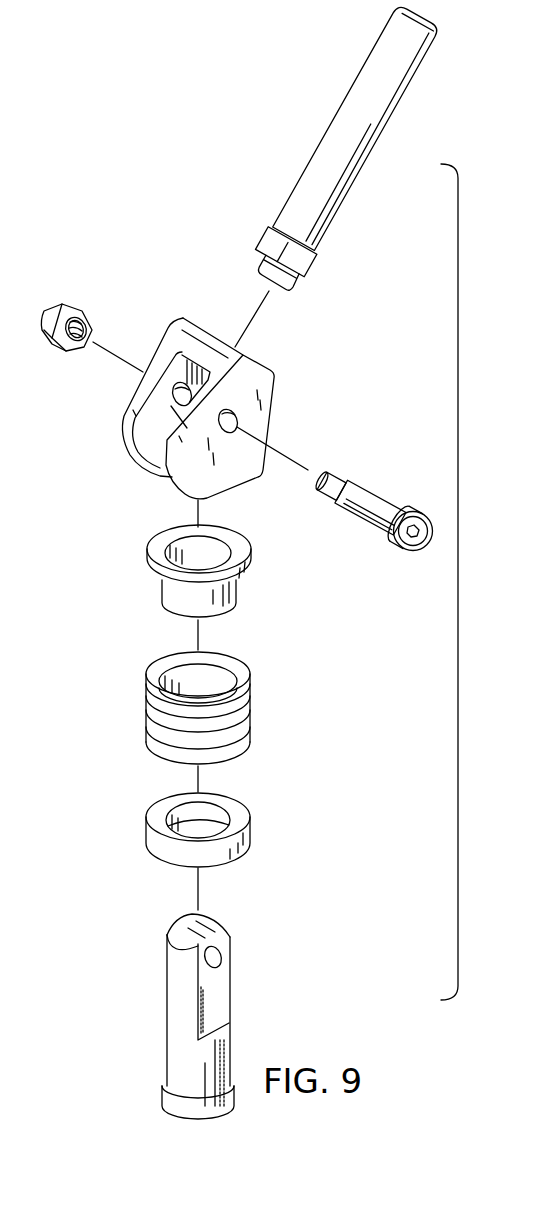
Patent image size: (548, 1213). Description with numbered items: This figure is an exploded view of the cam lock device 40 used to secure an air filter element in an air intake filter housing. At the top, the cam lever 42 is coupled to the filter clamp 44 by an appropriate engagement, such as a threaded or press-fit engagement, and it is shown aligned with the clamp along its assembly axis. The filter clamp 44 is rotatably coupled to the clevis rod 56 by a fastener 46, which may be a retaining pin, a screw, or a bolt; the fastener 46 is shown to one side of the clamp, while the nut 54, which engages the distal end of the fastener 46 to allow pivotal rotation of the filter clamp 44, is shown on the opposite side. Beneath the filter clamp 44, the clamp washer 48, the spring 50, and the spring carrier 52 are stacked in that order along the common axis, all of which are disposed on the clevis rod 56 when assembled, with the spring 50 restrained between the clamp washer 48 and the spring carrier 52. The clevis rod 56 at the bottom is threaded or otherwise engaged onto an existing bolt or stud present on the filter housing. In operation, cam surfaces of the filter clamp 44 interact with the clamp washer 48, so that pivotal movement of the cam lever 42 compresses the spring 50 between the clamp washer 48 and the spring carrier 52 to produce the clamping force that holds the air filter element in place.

The cam lock device 40 is at (458, 582).
The cam lever 42 is at (353, 180).
The filter clamp 44 is at (277, 392).
The fastener 46 is at (380, 488).
The clamp washer 48 is at (250, 562).
The spring 50 is at (146, 707).
The spring carrier 52 is at (146, 833).
The nut 54 is at (80, 304).
The clevis rod 56 is at (167, 998).